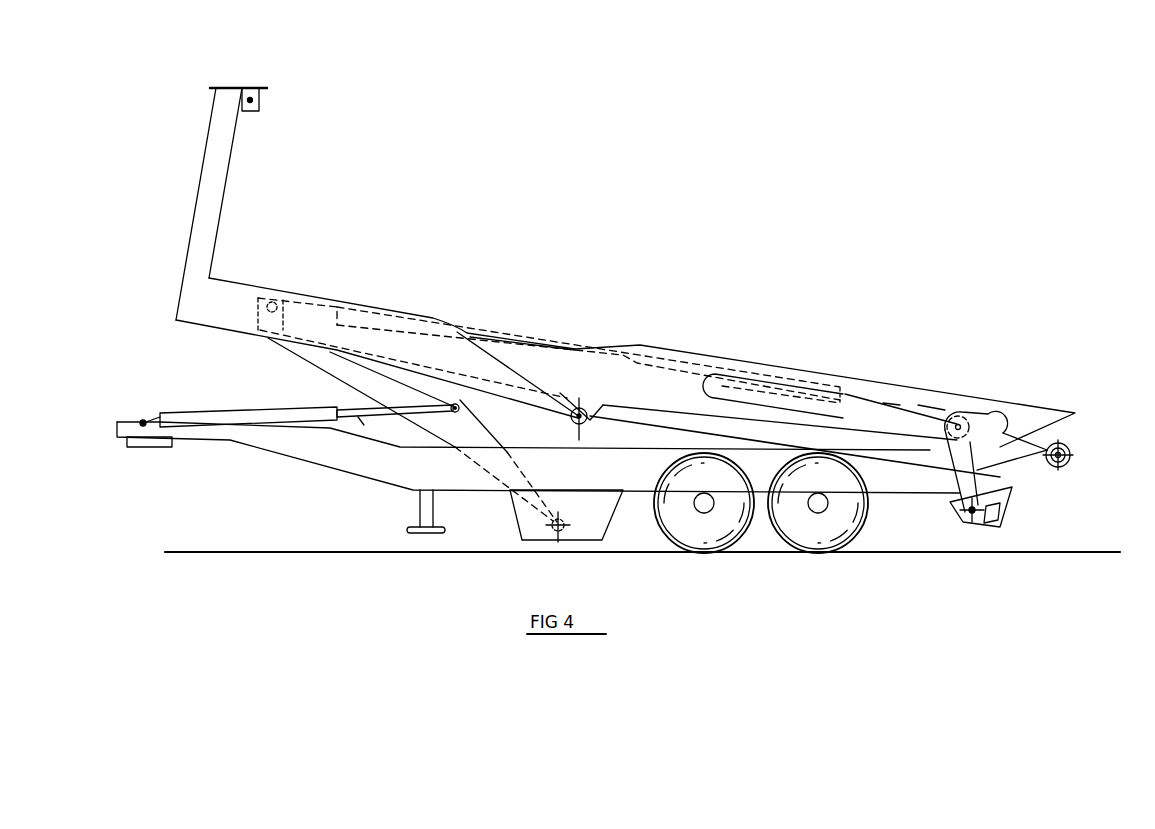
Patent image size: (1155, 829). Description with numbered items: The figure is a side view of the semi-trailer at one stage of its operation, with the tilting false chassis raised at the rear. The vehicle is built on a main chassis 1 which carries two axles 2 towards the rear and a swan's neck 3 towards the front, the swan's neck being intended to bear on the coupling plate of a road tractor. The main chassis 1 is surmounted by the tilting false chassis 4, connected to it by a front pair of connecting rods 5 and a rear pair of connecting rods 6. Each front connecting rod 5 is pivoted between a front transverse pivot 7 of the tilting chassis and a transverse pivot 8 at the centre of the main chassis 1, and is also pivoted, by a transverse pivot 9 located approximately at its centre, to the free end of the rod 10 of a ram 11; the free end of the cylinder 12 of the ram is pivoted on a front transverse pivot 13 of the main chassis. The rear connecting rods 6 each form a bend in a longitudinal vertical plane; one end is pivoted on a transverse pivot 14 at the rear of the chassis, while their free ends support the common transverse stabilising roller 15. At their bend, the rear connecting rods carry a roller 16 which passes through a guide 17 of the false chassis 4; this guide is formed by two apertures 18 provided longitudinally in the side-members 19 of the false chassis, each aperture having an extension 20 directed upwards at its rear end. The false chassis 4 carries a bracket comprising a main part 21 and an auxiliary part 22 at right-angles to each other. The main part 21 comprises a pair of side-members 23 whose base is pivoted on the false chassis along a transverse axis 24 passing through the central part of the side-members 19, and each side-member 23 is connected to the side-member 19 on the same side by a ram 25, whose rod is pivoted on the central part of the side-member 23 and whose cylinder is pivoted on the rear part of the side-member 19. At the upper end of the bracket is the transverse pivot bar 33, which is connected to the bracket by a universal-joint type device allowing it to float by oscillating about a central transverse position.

The main chassis 1 is at (353, 481).
The axles 2 is at (702, 555).
The swan's neck 3 is at (147, 447).
The tilting false chassis 4 is at (720, 358).
The front connecting rods 5 is at (329, 365).
The rear connecting rods 6 is at (963, 454).
The front transverse pivot 7 is at (257, 313).
The transverse pivot 8 is at (563, 523).
The transverse pivot 9 is at (450, 413).
The rod 10 is at (362, 416).
The ram 11 is at (280, 406).
The cylinder 12 is at (251, 417).
The front transverse pivot 13 is at (144, 420).
The transverse pivot 14 is at (972, 516).
The stabilising roller 15 is at (1072, 450).
The roller 16 is at (960, 424).
The guide 17 is at (918, 404).
The apertures 18 is at (884, 402).
The side-members 19 is at (660, 380).
The extension 20 is at (993, 414).
The main part 21 is at (240, 281).
The auxiliary part 22 is at (232, 188).
The side-members 23 is at (378, 308).
The transverse axis 24 is at (587, 418).
The ram 25 is at (500, 338).
The transverse pivot bar 33 is at (258, 88).